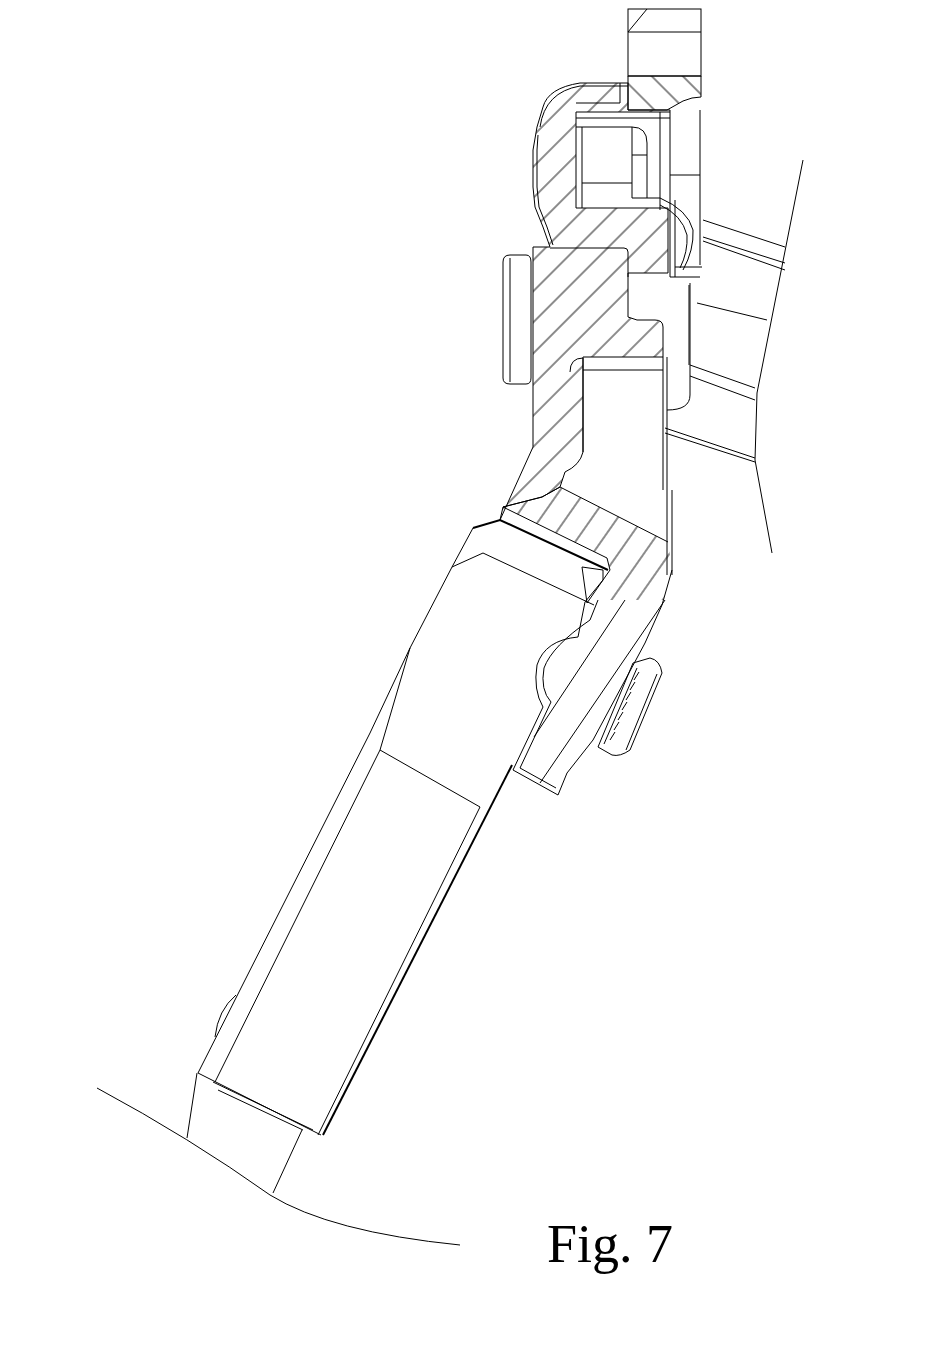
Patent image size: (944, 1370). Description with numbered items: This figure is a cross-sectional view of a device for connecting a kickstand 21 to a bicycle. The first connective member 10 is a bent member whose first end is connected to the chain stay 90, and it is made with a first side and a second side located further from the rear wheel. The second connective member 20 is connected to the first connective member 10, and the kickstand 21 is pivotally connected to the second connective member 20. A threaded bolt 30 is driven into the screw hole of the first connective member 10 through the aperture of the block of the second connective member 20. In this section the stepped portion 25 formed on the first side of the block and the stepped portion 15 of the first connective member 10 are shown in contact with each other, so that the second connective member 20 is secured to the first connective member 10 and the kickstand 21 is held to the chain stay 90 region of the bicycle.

The first connective member 10 is at (562, 122).
The stepped portion 15 is at (640, 327).
The second connective member 20 is at (543, 497).
The kickstand 21 is at (227, 1132).
The stepped portion 25 is at (628, 283).
The threaded bolt 30 is at (520, 310).
The chain stay 90 is at (735, 307).